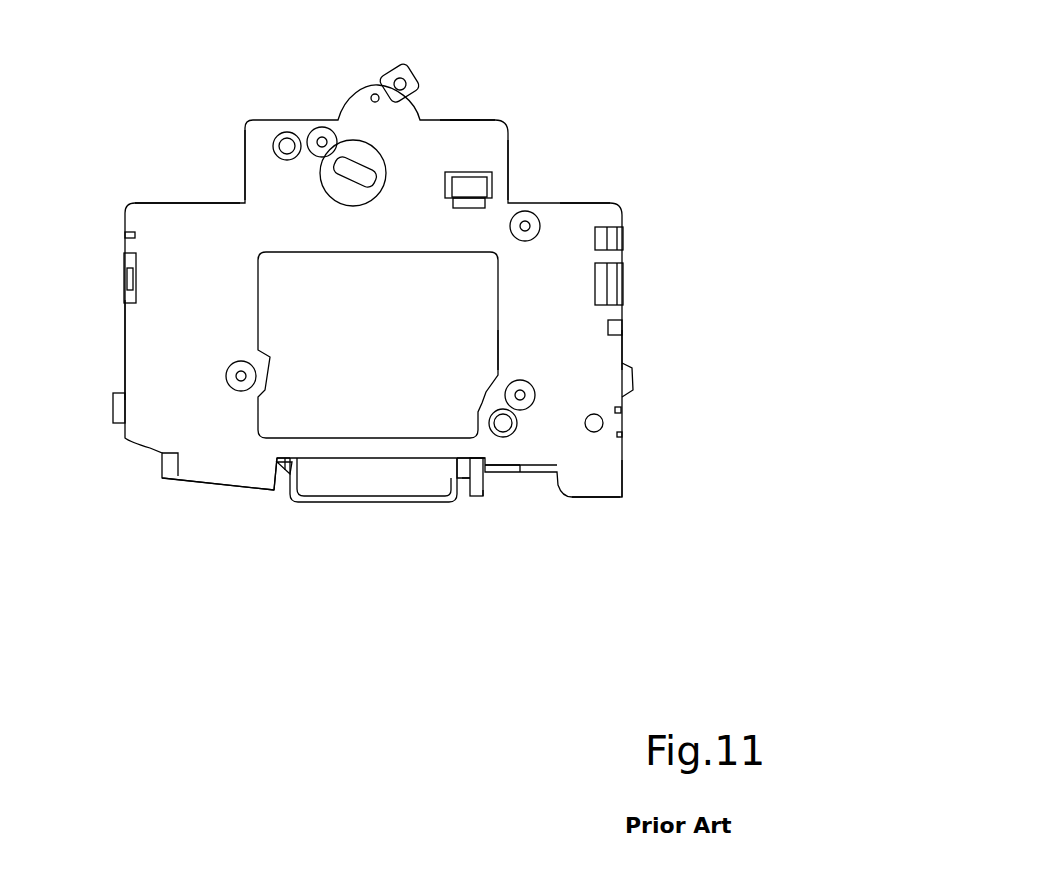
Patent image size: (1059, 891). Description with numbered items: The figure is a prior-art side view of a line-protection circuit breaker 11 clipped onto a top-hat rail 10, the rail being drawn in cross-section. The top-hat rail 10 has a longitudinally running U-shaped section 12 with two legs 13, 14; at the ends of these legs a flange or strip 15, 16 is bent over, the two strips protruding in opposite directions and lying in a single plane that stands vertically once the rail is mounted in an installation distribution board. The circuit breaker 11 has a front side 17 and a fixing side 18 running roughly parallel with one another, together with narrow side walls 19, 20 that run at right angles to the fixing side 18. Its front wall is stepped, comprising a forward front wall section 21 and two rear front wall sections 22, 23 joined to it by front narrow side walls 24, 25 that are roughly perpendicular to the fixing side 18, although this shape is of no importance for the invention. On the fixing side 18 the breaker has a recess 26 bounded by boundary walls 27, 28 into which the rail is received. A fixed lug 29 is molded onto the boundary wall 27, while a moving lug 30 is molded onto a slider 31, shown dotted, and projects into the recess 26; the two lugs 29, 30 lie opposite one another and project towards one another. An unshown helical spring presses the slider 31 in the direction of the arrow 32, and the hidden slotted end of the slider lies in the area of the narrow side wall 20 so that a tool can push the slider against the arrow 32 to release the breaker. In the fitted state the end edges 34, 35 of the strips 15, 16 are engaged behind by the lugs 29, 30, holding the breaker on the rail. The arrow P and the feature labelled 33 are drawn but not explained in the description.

The top-hat rail 10 is at (372, 520).
The line-protection circuit breaker 11 is at (585, 253).
The U-shaped section 12 is at (322, 514).
The leg 13 is at (290, 470).
The leg 14 is at (462, 492).
The flange or strip 15 is at (281, 487).
The flange or strip 16 is at (467, 460).
The front side 17 is at (466, 105).
The fixing side 18 is at (568, 500).
The narrow side wall 19 is at (118, 348).
The narrow side wall 20 is at (620, 350).
The forward front wall section 21 is at (490, 122).
The rear front wall section 22 is at (180, 200).
The rear front wall section 23 is at (585, 205).
The front narrow side wall 24 is at (247, 167).
The front narrow side wall 25 is at (510, 173).
The recess 26 is at (348, 480).
The boundary wall 27 is at (275, 462).
The boundary wall 28 is at (478, 490).
The fixed lug 29 is at (272, 480).
The moving lug 30 is at (468, 494).
The slider 31 is at (483, 477).
The arrow 32 is at (580, 352).
The right lower edge 33 is at (623, 475).
The end edge 34 is at (273, 462).
The end edge 35 is at (470, 460).
The mounting force direction P is at (858, 482).